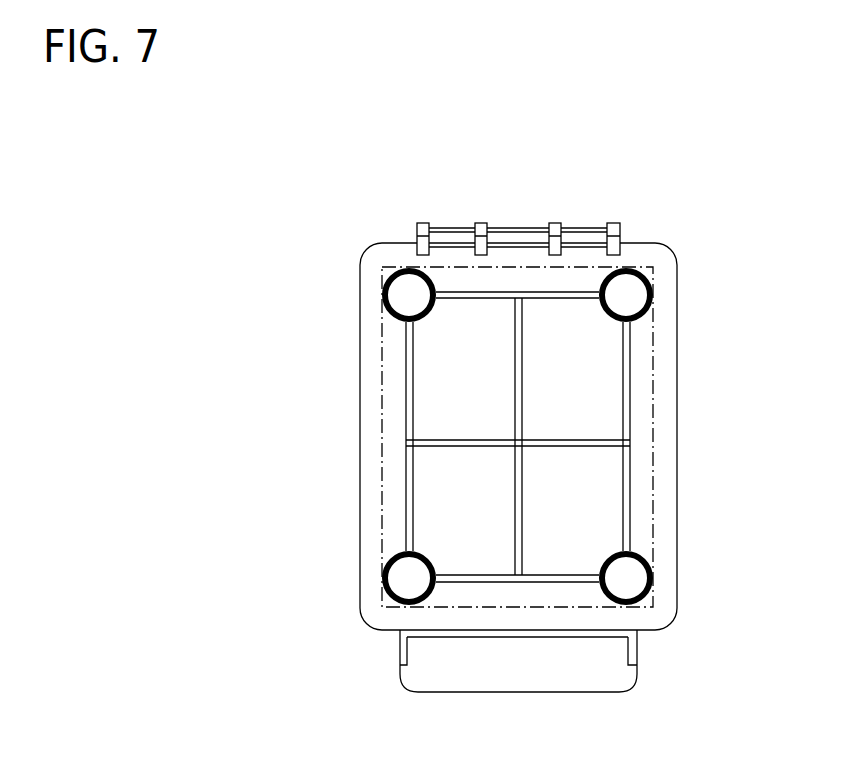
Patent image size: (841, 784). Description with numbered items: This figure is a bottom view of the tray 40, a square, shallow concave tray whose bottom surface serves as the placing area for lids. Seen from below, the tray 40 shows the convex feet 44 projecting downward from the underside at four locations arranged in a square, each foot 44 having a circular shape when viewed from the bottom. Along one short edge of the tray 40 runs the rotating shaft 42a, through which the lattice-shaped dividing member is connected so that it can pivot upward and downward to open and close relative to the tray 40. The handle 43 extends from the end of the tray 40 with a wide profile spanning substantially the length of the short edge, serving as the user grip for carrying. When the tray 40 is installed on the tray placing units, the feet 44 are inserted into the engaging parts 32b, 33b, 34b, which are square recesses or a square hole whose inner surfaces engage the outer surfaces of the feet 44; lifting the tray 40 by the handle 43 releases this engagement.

The tray 40 is at (716, 296).
The rotating shaft 42a is at (517, 237).
The handle 43 is at (615, 677).
The convex feet 44 is at (397, 318).
The engaging part 32b is at (425, 437).
The engaging part 33b is at (425, 437).
The engaging part 34b is at (389, 423).